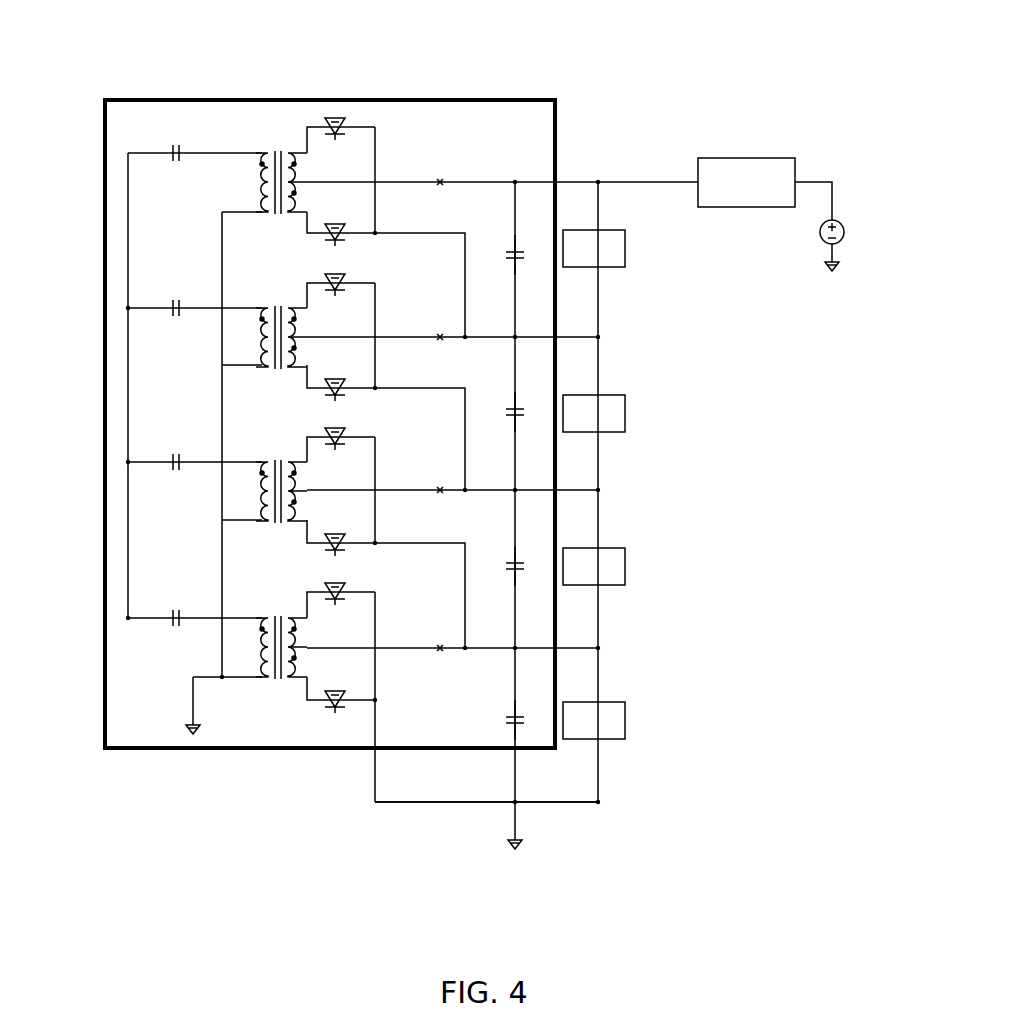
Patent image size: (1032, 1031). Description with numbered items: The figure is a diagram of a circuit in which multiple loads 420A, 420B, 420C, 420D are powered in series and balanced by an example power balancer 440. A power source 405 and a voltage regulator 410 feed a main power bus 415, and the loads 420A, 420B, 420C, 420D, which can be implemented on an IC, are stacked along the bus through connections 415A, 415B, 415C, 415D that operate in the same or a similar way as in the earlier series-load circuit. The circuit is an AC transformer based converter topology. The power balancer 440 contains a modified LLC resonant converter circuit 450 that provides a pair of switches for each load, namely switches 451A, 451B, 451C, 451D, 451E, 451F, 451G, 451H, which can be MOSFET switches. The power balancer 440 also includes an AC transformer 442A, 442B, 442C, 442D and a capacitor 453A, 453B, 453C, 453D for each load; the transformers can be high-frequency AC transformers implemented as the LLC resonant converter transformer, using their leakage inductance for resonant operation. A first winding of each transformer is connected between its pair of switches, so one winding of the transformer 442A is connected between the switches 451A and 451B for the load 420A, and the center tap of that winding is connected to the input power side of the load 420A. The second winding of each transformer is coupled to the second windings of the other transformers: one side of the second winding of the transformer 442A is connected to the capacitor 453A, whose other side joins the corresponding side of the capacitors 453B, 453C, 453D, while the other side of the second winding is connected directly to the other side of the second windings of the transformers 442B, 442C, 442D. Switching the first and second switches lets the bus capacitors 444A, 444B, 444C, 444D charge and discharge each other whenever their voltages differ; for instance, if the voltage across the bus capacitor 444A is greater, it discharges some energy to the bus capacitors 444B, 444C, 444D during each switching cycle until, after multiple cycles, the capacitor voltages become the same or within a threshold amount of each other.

The power source 405 is at (842, 212).
The voltage regulator 410 is at (760, 142).
The main power bus 415 is at (650, 170).
The connection 415A is at (610, 322).
The connection 415B is at (608, 496).
The connection 415C is at (605, 654).
The connection 415D is at (550, 813).
The load 420A is at (643, 253).
The load 420B is at (635, 403).
The load 420C is at (645, 566).
The load 420D is at (645, 720).
The power balancer 440 is at (312, 92).
The AC transformer 442A is at (258, 148).
The AC transformer 442B is at (265, 305).
The AC transformer 442C is at (265, 460).
The AC transformer 442D is at (257, 692).
The bus capacitor 444A is at (530, 238).
The bus capacitor 444B is at (537, 428).
The bus capacitor 444C is at (540, 580).
The bus capacitor 444D is at (533, 740).
The modified LLC resonant converter circuit 450 is at (409, 135).
The switch 451A is at (365, 118).
The switch 451B is at (352, 213).
The switch 451C is at (312, 280).
The switch 451D is at (362, 372).
The switch 451E is at (315, 435).
The switch 451F is at (362, 528).
The switch 451G is at (318, 590).
The switch 451H is at (322, 723).
The capacitor 453A is at (158, 143).
The capacitor 453B is at (160, 302).
The capacitor 453C is at (160, 455).
The capacitor 453D is at (160, 610).